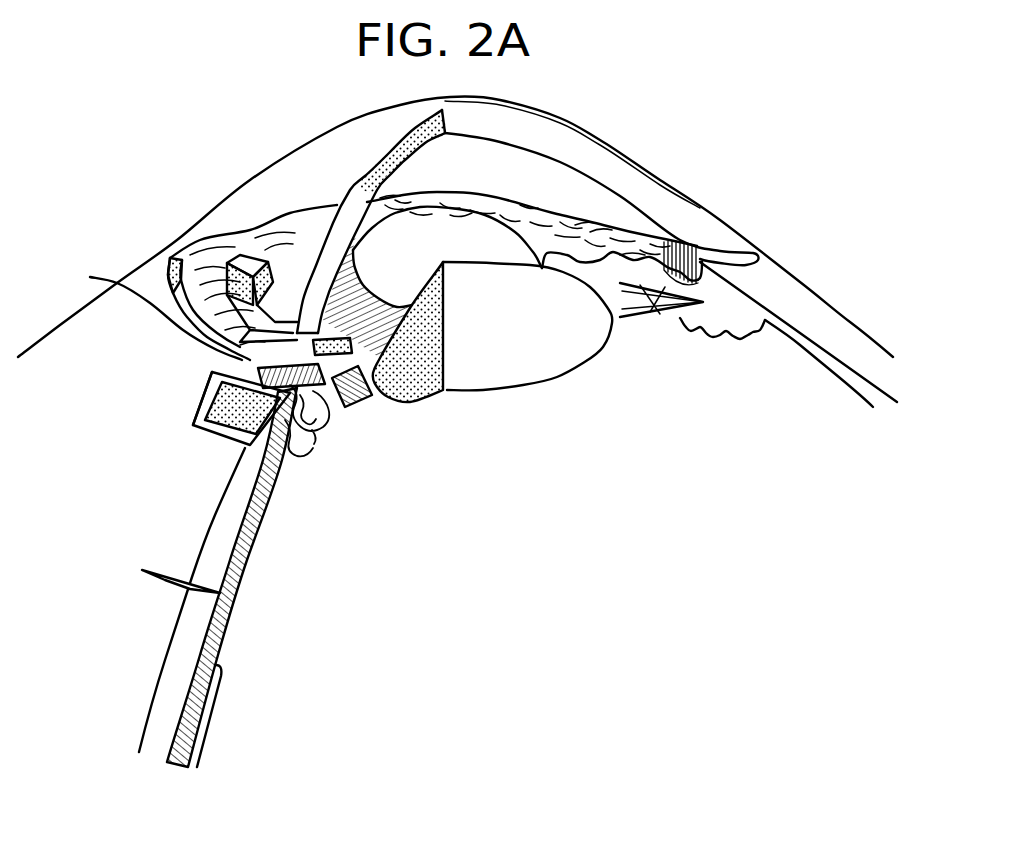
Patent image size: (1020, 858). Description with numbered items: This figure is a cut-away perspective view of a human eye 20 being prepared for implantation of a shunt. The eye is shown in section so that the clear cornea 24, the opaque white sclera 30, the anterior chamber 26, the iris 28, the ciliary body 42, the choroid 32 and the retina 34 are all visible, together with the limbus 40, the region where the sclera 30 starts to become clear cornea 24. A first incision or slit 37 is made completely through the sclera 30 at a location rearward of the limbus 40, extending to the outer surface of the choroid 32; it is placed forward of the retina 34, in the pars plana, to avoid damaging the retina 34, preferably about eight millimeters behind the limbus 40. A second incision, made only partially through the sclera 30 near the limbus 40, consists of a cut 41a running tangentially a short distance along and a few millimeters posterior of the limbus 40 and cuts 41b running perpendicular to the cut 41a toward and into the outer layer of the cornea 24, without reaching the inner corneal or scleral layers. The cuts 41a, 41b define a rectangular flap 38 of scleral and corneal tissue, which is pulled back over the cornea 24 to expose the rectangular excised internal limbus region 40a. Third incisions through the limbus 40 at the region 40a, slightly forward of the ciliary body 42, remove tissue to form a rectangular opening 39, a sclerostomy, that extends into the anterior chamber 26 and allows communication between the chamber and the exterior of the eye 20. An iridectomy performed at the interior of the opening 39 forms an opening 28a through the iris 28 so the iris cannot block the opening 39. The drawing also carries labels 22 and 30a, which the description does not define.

The human eye 20 is at (457, 307).
The crystalline lens 22 is at (553, 361).
The cornea 24 is at (251, 181).
The anterior chamber 26 is at (493, 185).
The iris 28 is at (550, 213).
The opening 28a is at (357, 390).
The sclera 30 is at (287, 514).
The instrument shaft 30a is at (250, 475).
The choroid 32 is at (258, 527).
The retina 34 is at (212, 712).
The first incision or slit 37 is at (173, 578).
The rectangular flap 38 is at (177, 257).
The rectangular opening 39 is at (245, 375).
The limbus 40 is at (180, 307).
The excised internal limbus region 40a is at (240, 420).
The cut 41a is at (200, 430).
The cuts 41b is at (365, 385).
The ciliary body 42 is at (313, 430).